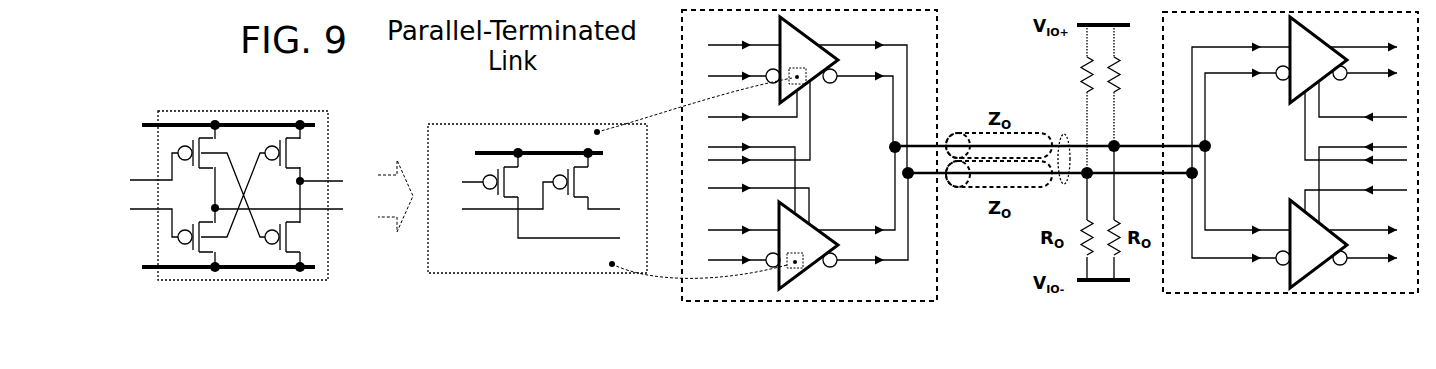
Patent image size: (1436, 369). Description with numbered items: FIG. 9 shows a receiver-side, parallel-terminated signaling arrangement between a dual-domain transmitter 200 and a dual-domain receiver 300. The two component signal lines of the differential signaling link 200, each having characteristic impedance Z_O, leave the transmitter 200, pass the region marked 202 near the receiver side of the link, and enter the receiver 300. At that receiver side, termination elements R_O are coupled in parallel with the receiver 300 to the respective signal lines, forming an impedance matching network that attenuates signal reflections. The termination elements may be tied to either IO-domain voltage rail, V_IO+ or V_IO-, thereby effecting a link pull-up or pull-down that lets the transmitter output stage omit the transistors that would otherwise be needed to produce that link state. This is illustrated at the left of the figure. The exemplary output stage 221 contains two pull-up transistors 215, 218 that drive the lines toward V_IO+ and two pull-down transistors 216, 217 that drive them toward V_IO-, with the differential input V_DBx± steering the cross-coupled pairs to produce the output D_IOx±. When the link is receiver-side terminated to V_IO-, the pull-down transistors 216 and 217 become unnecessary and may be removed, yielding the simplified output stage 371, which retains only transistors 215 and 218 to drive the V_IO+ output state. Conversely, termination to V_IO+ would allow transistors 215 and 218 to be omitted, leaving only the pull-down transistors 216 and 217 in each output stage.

The signaling link / transmitter 200 is at (912, 33).
The transmission line reference point 202 is at (1064, 134).
The output stage transistor 215 is at (357, 167).
The output stage transistor 216 is at (195, 229).
The output stage transistor 217 is at (291, 237).
The output stage transistor 218 is at (434, 167).
The output stage 221 is at (328, 268).
The dual-domain receiver 300 is at (1222, 33).
The simplified output stage 371 is at (428, 141).